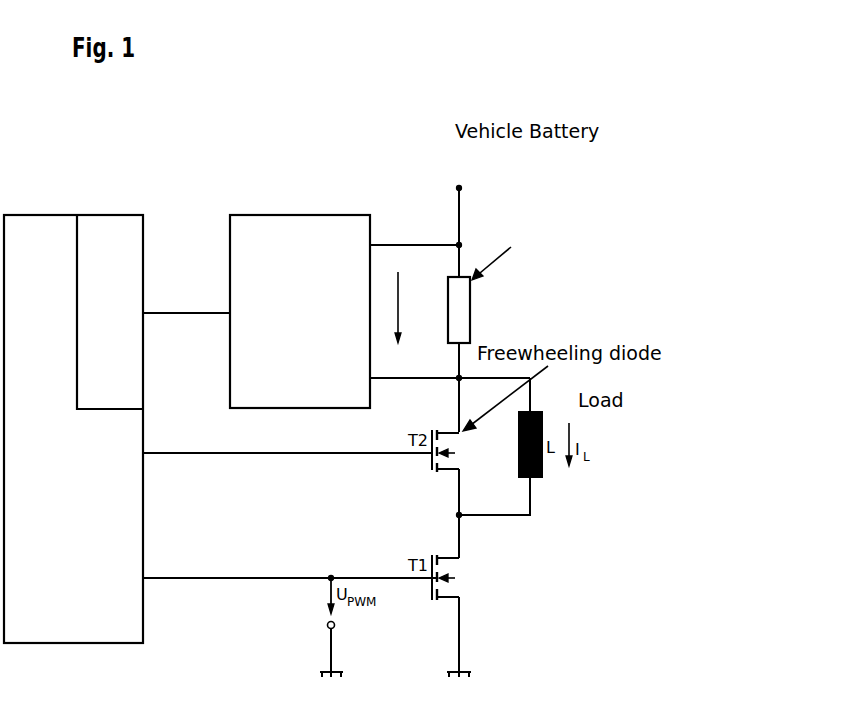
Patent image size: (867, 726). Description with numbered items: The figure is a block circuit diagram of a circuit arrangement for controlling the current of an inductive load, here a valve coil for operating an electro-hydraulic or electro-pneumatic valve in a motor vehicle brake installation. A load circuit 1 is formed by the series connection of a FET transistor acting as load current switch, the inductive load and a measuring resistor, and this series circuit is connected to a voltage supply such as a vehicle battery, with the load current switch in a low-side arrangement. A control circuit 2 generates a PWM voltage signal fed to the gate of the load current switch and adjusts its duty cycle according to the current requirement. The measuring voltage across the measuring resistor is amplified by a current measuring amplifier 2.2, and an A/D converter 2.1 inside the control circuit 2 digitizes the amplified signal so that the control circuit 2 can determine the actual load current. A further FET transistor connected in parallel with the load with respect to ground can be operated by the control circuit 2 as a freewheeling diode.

The load circuit 1 is at (538, 312).
The control circuit 2 is at (46, 224).
The A/D converter 2.1 is at (114, 224).
The current measuring amplifier 2.2 is at (292, 224).